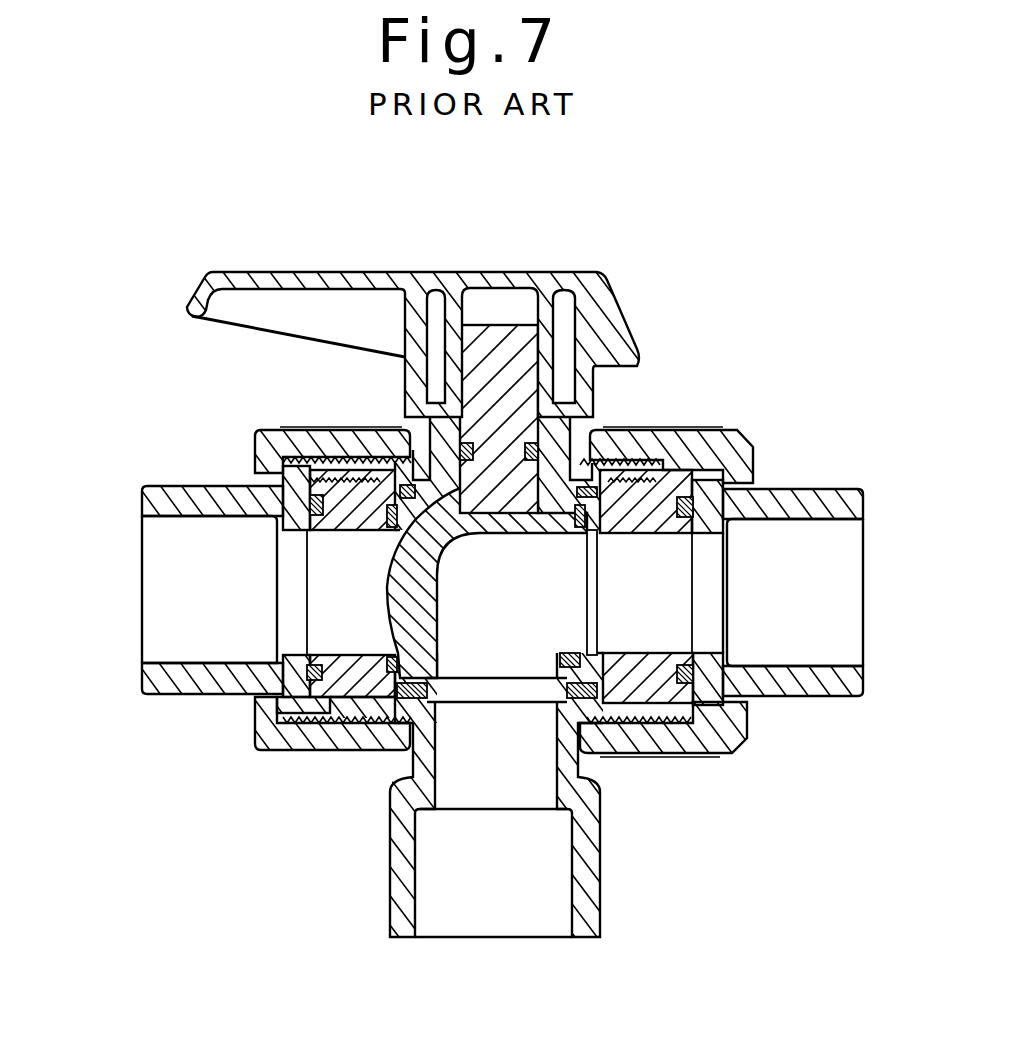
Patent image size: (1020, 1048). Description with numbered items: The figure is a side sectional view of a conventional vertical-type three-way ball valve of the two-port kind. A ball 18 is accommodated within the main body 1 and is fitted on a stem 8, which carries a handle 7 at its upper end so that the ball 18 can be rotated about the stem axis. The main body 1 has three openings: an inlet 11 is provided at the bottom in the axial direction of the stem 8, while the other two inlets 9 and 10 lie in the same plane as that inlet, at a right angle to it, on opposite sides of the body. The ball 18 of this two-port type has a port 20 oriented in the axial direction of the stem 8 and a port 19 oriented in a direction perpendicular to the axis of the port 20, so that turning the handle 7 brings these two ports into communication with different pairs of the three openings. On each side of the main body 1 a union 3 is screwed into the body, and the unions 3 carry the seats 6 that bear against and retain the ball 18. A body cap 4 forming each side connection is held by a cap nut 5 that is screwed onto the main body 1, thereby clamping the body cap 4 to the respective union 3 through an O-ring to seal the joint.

The main body 1 is at (403, 857).
The union 3 is at (360, 500).
The body cap 4 is at (167, 497).
The cap nut 5 is at (278, 447).
The seat 6 is at (605, 703).
The handle 7 is at (214, 273).
The stem 8 is at (512, 373).
The inlet 9 is at (172, 588).
The inlet 10 is at (820, 597).
The inlet 11 is at (497, 913).
The ball 18 is at (393, 600).
The port 19 is at (585, 606).
The port 20 is at (504, 673).